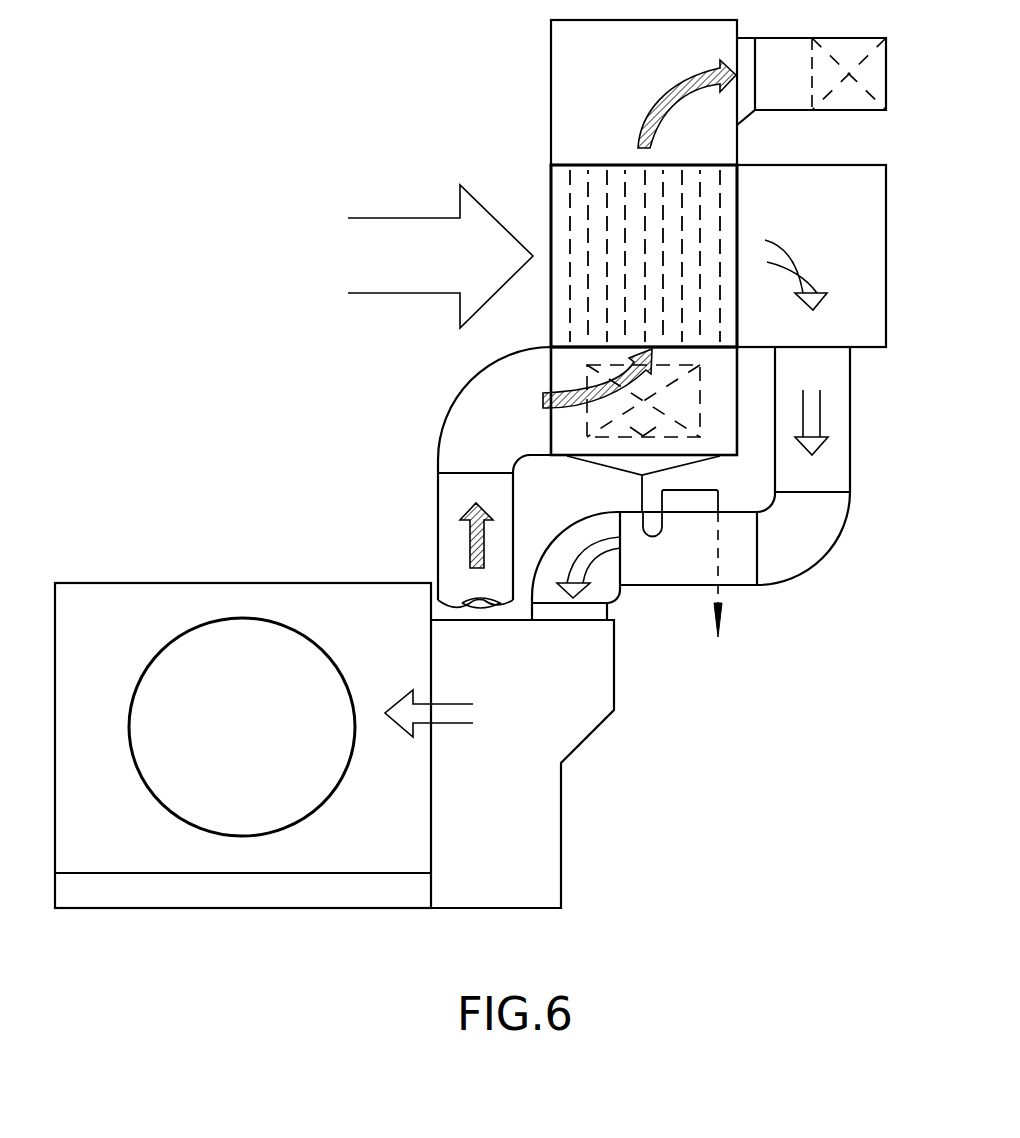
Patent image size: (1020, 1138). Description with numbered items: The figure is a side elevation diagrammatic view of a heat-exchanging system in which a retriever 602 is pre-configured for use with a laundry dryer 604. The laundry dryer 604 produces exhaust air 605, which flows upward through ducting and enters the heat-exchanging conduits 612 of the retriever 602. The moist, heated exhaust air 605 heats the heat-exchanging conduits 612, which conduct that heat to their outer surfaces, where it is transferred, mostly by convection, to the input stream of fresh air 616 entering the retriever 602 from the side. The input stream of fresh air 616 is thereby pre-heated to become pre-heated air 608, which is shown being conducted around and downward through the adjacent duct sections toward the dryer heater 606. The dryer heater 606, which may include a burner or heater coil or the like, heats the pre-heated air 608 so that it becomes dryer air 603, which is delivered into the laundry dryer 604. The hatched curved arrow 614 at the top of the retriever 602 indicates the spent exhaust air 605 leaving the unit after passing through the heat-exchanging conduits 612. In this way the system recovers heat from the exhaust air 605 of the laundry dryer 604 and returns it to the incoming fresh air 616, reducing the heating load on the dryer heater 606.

The retriever 602 is at (570, 196).
The dryer air 603 is at (443, 704).
The laundry dryer 604 is at (60, 845).
The exhaust air 605 is at (543, 400).
The dryer heater 606 is at (614, 710).
The pre-heated air 608 is at (815, 265).
The heat-exchanging conduits 612 is at (590, 320).
The outlet air flow 614 is at (664, 90).
The input stream of fresh air 616 is at (421, 269).